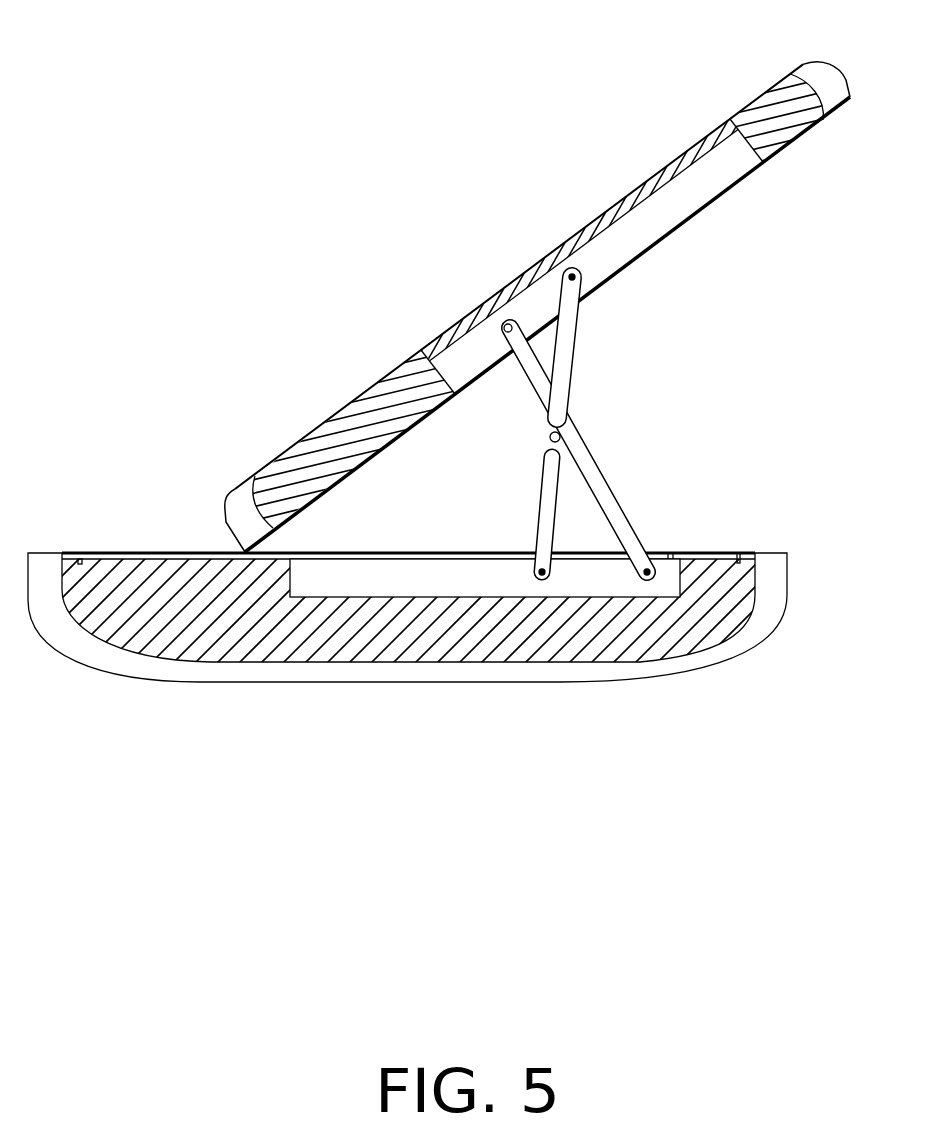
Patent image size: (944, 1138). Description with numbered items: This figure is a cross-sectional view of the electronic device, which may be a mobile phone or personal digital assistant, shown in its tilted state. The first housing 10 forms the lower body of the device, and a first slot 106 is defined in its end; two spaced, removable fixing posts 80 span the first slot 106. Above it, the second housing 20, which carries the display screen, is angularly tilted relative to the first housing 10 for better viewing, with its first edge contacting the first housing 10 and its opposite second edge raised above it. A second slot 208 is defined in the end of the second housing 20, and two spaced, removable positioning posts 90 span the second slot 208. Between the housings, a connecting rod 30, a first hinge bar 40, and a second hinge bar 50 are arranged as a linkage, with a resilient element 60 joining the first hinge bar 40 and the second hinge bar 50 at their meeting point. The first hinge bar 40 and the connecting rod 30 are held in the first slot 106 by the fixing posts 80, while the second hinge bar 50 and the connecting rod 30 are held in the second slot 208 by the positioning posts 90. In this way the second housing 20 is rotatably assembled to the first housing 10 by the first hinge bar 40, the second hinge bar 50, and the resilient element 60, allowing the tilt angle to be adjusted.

The first housing 10 is at (187, 624).
The first slot 106 is at (443, 585).
The second housing 20 is at (537, 278).
The second slot 208 is at (458, 367).
The connecting rod 30 is at (588, 468).
The first hinge bar 40 is at (547, 515).
The second hinge bar 50 is at (563, 345).
The resilient element 60 is at (560, 436).
The fixing post 80 is at (548, 575).
The positioning post 90 is at (505, 320).